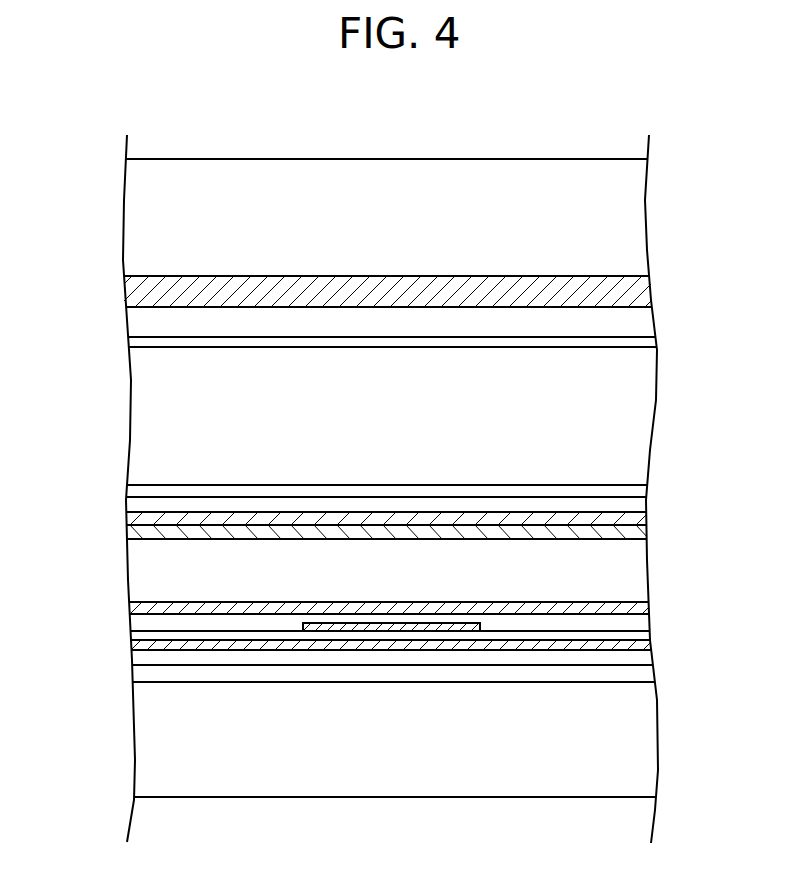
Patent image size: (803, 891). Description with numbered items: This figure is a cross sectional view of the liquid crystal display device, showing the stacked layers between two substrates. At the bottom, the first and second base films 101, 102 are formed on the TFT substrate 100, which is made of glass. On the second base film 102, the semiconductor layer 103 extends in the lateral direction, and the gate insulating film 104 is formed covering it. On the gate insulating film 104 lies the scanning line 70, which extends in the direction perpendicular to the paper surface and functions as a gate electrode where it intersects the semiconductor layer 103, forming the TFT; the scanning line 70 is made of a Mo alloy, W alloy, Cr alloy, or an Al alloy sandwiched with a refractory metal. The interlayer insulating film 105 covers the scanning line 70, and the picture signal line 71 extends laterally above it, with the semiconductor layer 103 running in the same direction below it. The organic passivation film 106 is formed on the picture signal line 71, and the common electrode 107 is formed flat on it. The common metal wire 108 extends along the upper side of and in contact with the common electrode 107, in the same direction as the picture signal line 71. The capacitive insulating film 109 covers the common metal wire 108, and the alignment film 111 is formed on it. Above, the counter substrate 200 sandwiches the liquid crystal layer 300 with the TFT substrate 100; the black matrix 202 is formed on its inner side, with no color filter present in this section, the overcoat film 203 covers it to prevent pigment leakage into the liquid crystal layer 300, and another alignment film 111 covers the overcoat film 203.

The counter substrate 200 is at (626, 218).
The black matrix 202 is at (630, 286).
The overcoat film 203 is at (628, 323).
The alignment film 111 is at (585, 348).
The liquid crystal layer 300 is at (627, 415).
The capacitive insulating film 109 is at (628, 507).
The common metal wire 108 is at (135, 522).
The common electrode 107 is at (160, 538).
The organic passivation film 106 is at (152, 577).
The picture signal line 71 is at (575, 601).
The interlayer insulating film 105 is at (641, 623).
The gate insulating film 104 is at (648, 640).
The semiconductor layer 103 is at (155, 655).
The second base film 102 is at (650, 655).
The first base film 101 is at (650, 675).
The TFT substrate 100 is at (637, 767).
The scanning line 70 is at (400, 628).